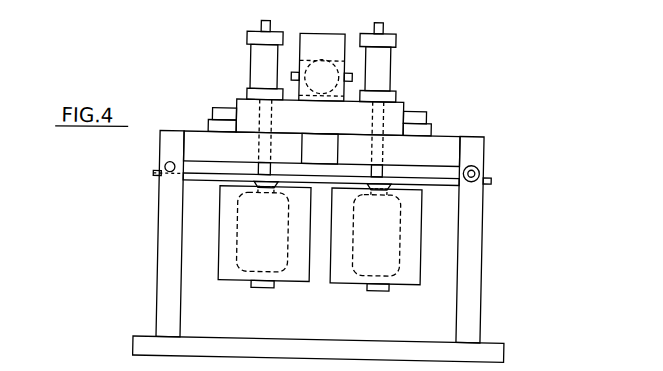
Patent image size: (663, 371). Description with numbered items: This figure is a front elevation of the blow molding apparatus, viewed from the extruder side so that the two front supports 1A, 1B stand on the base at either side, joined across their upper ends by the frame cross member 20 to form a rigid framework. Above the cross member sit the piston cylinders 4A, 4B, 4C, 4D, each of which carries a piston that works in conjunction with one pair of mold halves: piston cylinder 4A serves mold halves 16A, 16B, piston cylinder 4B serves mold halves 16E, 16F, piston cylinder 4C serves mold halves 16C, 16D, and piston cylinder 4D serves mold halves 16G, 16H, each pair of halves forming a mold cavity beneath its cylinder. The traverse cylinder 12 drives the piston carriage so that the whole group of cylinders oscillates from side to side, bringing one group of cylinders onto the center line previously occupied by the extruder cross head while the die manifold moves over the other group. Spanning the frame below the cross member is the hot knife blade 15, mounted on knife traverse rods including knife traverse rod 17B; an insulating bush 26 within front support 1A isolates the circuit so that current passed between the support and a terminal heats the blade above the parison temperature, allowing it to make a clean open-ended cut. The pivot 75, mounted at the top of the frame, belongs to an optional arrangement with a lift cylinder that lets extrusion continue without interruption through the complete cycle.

The front support 1A is at (471, 141).
The front support 1B is at (163, 137).
The piston cylinder 4A is at (384, 35).
The piston cylinder 4B is at (254, 36).
The piston cylinder 4C is at (430, 107).
The piston cylinder 4D is at (212, 108).
The traverse cylinder 12 is at (344, 126).
The knife blade 15 is at (402, 176).
The mold half 16A is at (406, 208).
The mold half 16B is at (455, 246).
The mold half 16C is at (461, 301).
The mold half 16D is at (464, 262).
The mold half 16E is at (225, 231).
The mold half 16F is at (187, 242).
The mold half 16G is at (180, 296).
The mold half 16H is at (180, 257).
The knife traverse rod 17B is at (477, 163).
The frame cross member 20 is at (406, 144).
The insulating bush 26 is at (482, 171).
The pivot 75 is at (287, 73).